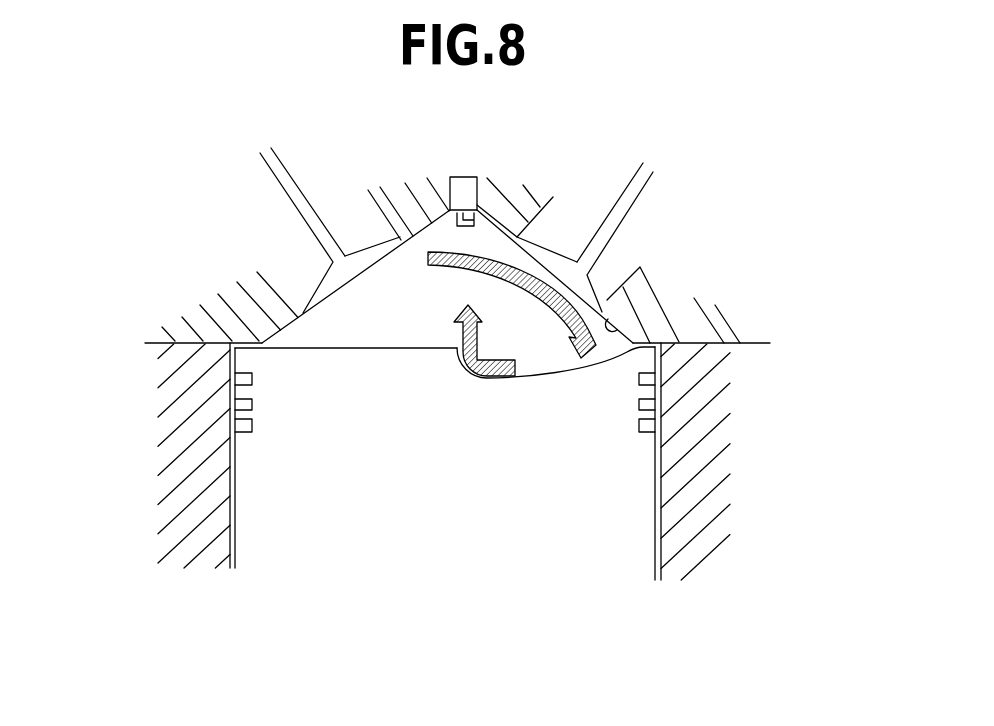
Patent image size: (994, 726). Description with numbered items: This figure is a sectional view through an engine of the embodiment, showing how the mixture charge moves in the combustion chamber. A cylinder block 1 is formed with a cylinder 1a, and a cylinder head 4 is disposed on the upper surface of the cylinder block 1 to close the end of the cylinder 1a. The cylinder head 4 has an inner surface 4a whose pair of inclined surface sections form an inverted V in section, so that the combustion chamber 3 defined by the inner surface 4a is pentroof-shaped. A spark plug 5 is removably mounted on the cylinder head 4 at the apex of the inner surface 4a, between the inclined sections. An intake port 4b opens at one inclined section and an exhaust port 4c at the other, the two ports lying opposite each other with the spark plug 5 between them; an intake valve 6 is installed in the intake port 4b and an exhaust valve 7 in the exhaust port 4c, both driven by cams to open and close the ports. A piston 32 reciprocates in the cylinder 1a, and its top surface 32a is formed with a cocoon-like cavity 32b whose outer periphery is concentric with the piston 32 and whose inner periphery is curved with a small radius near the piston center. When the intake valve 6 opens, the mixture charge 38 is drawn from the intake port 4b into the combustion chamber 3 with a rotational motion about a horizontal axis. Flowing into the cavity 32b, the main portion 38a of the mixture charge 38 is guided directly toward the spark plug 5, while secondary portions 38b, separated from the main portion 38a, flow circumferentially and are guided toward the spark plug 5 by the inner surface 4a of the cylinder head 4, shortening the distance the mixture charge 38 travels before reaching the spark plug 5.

The cylinder block 1 is at (696, 500).
The cylinder 1a is at (659, 540).
The combustion chamber 3 is at (403, 349).
The cylinder head 4 is at (673, 312).
The inner surface 4a is at (637, 302).
The intake port 4b is at (300, 272).
The exhaust port 4c is at (565, 220).
The spark plug 5 is at (467, 188).
The intake valve 6 is at (365, 250).
The exhaust valve 7 is at (590, 283).
The piston 32 is at (661, 450).
The top surface 32a is at (343, 348).
The cavity 32b is at (552, 380).
The mixture charge 38 is at (512, 383).
The main portion 38a is at (542, 293).
The secondary portion 38b is at (480, 389).